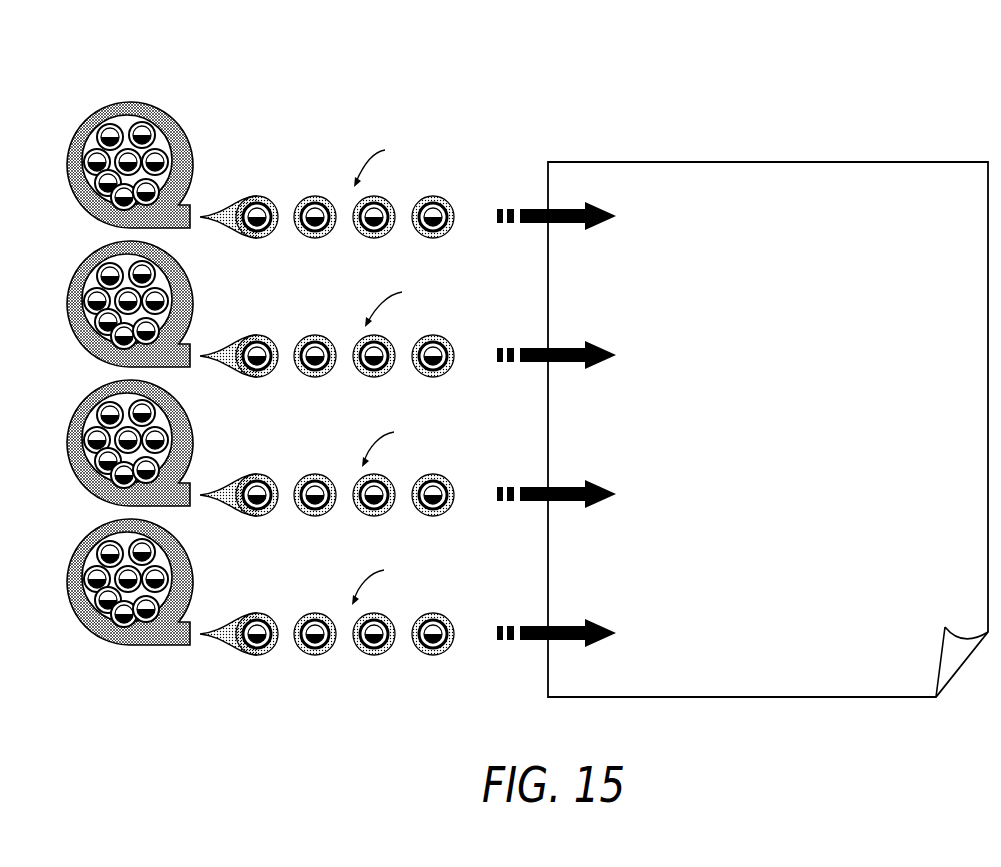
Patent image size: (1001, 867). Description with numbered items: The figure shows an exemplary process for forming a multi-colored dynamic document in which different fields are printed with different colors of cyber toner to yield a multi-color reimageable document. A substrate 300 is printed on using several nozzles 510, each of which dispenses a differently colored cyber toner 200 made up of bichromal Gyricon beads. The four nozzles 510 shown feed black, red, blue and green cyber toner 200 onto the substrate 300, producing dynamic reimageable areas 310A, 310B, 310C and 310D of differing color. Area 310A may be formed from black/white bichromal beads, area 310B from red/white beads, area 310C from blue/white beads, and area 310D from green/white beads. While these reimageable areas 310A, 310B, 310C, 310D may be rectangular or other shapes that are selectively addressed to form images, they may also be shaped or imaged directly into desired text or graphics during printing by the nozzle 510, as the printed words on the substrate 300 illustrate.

The nozzle 510 is at (146, 92).
The cyber toner 200 is at (450, 118).
The substrate 300 is at (760, 160).
The dynamic reimageable area 310A is at (843, 209).
The dynamic reimageable area 310B is at (873, 341).
The dynamic reimageable area 310C is at (873, 484).
The dynamic reimageable area 310D is at (873, 616).